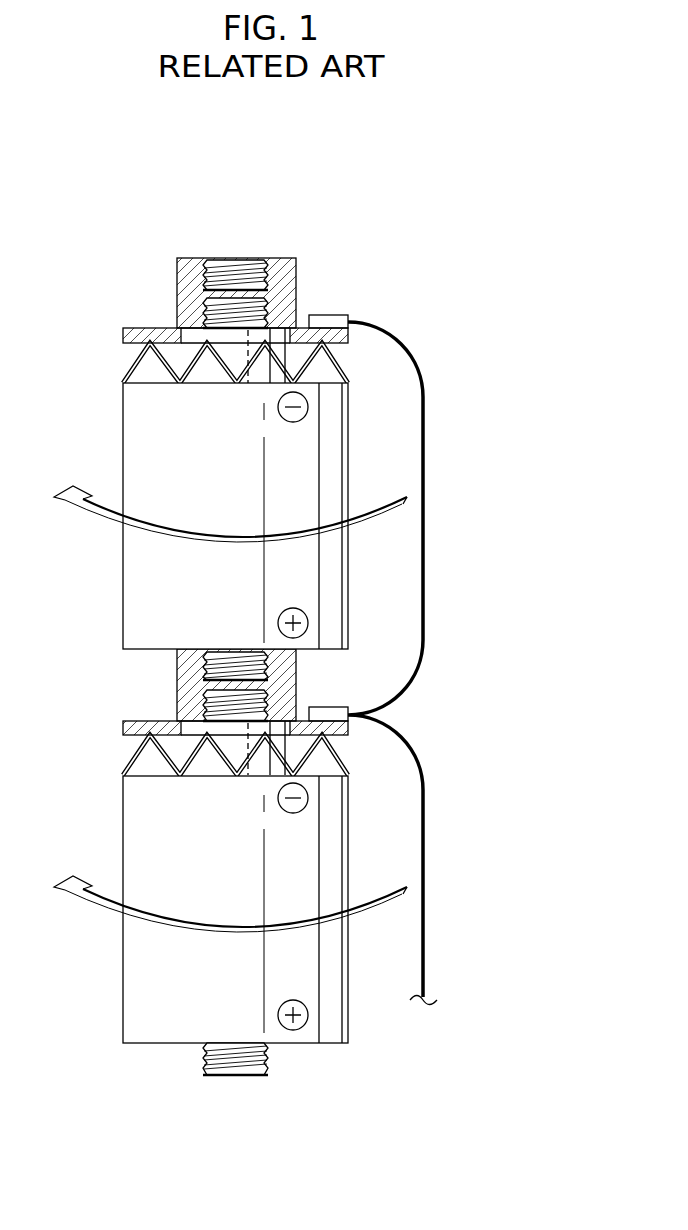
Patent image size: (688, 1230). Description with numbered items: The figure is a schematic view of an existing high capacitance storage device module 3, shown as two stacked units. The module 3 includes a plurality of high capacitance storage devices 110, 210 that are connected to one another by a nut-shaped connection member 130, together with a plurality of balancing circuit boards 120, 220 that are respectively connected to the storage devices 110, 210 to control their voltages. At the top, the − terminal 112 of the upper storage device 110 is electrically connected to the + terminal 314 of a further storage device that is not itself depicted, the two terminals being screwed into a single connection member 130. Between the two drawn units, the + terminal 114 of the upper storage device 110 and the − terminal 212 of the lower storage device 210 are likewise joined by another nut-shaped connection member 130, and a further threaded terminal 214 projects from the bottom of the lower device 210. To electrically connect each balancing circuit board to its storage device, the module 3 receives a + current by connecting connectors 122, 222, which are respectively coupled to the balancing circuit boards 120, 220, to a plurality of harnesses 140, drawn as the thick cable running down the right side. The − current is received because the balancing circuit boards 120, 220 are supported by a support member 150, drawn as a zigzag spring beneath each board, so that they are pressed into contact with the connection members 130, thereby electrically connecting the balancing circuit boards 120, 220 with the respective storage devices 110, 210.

The high capacitance storage device module 3 is at (103, 210).
The high capacitance storage device 110 is at (350, 445).
The − terminal 112 is at (217, 313).
The + terminal 114 is at (220, 668).
The balancing circuit board 120 is at (348, 346).
The connector 122 is at (333, 315).
The connection member 130 is at (190, 279).
The harness 140 is at (427, 480).
The support member 150 is at (135, 365).
The high capacitance storage device 210 is at (350, 828).
The − terminal 212 is at (218, 700).
The fourth thread portion 214 is at (267, 1060).
The balancing circuit board 220 is at (345, 728).
The connector 222 is at (337, 710).
The + terminal 314 is at (232, 265).